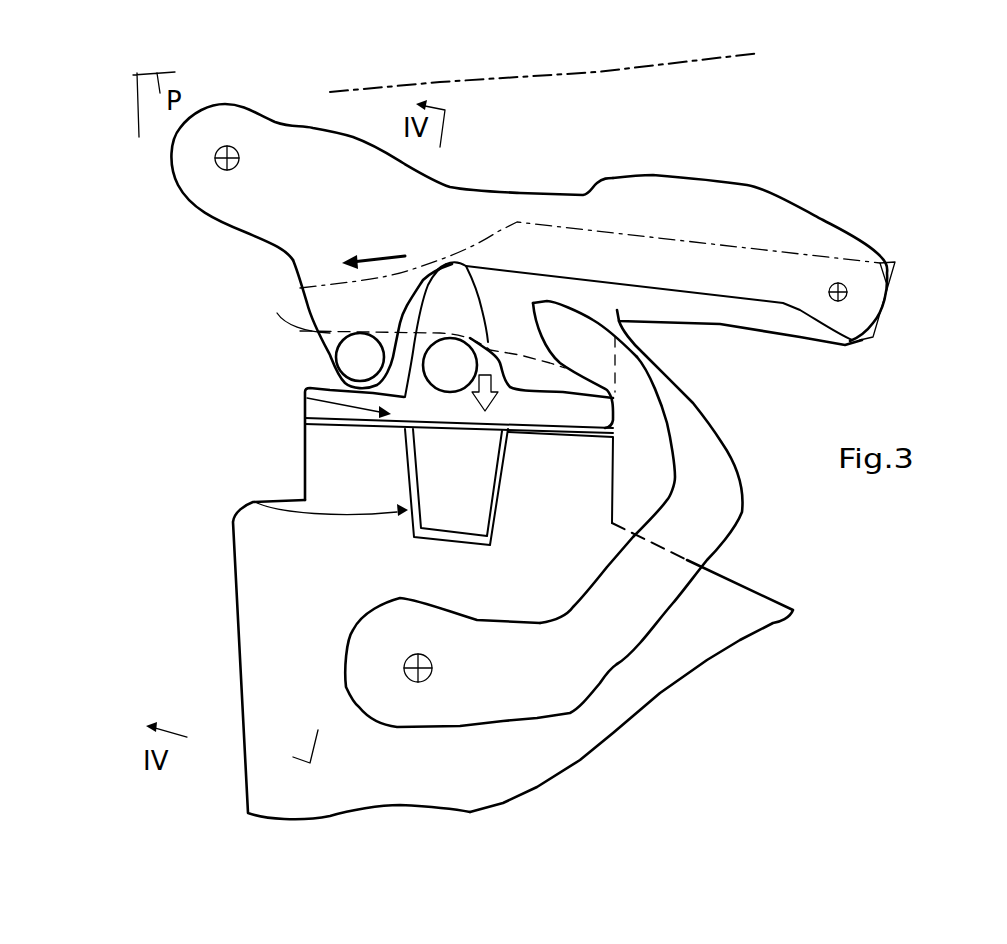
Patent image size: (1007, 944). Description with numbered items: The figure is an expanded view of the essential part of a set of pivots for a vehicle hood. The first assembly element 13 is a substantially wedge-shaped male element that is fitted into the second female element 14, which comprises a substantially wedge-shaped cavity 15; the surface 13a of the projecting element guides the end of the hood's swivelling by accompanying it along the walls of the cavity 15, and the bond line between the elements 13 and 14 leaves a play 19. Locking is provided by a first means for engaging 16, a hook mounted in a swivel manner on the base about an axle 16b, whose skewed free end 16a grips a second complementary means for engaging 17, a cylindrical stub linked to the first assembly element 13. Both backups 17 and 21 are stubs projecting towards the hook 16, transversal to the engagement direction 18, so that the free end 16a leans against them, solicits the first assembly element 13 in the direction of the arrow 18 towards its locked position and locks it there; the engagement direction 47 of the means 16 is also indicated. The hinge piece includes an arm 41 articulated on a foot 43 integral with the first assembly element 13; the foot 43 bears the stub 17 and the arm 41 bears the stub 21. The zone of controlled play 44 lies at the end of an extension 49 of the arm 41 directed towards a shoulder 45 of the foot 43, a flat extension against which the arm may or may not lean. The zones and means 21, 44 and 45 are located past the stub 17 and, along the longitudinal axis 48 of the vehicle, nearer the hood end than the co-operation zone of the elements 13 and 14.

The first assembly element 13 is at (305, 397).
The surface of the projecting element 13a is at (487, 483).
The second female element 14 is at (253, 502).
The cavity 15 is at (490, 523).
The first means for engaging 16 is at (557, 692).
The free end of the hook 16a is at (567, 317).
The axle 16b is at (410, 668).
The second complementary means for engaging 17 is at (452, 355).
The engagement direction 18 is at (500, 378).
The play 19 is at (367, 427).
The third means 21 is at (353, 355).
The arm 41 is at (803, 230).
The foot 43 is at (868, 337).
The zone of controlled play 44 is at (333, 380).
The shoulder of the foot 45 is at (310, 392).
The engagement direction of the means 47 is at (388, 248).
The longitudinal axis of the vehicle 48 is at (670, 66).
The extension of the arm 49 is at (293, 267).